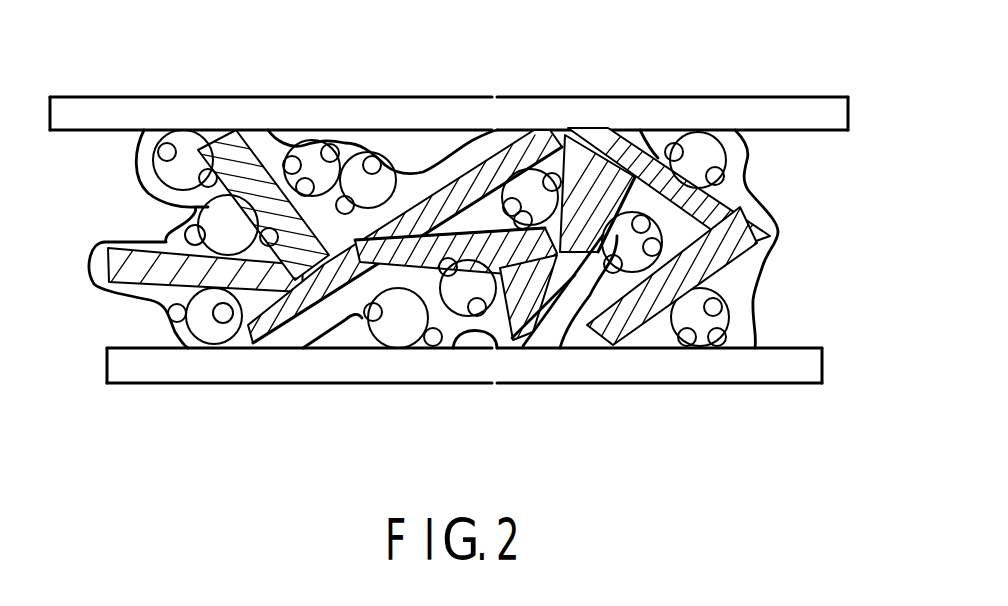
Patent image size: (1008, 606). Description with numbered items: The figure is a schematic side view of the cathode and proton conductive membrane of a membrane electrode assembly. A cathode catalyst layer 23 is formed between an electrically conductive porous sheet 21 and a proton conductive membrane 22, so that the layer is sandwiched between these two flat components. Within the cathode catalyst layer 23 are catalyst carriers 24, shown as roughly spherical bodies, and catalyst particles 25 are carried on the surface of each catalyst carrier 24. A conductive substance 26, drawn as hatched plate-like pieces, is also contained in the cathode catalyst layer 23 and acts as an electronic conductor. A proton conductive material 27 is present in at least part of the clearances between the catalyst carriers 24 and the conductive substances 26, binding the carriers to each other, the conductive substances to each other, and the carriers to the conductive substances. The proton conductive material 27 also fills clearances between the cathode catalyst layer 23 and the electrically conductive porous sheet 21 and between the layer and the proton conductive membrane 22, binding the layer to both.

The electrically conductive porous sheet 21 is at (348, 357).
The proton conductive membrane 22 is at (514, 118).
The cathode catalyst layer 23 is at (840, 148).
The catalyst carrier 24 is at (458, 296).
The catalyst particles 25 is at (226, 323).
The conductive substance 26 is at (611, 326).
The proton conductive material 27 is at (410, 182).